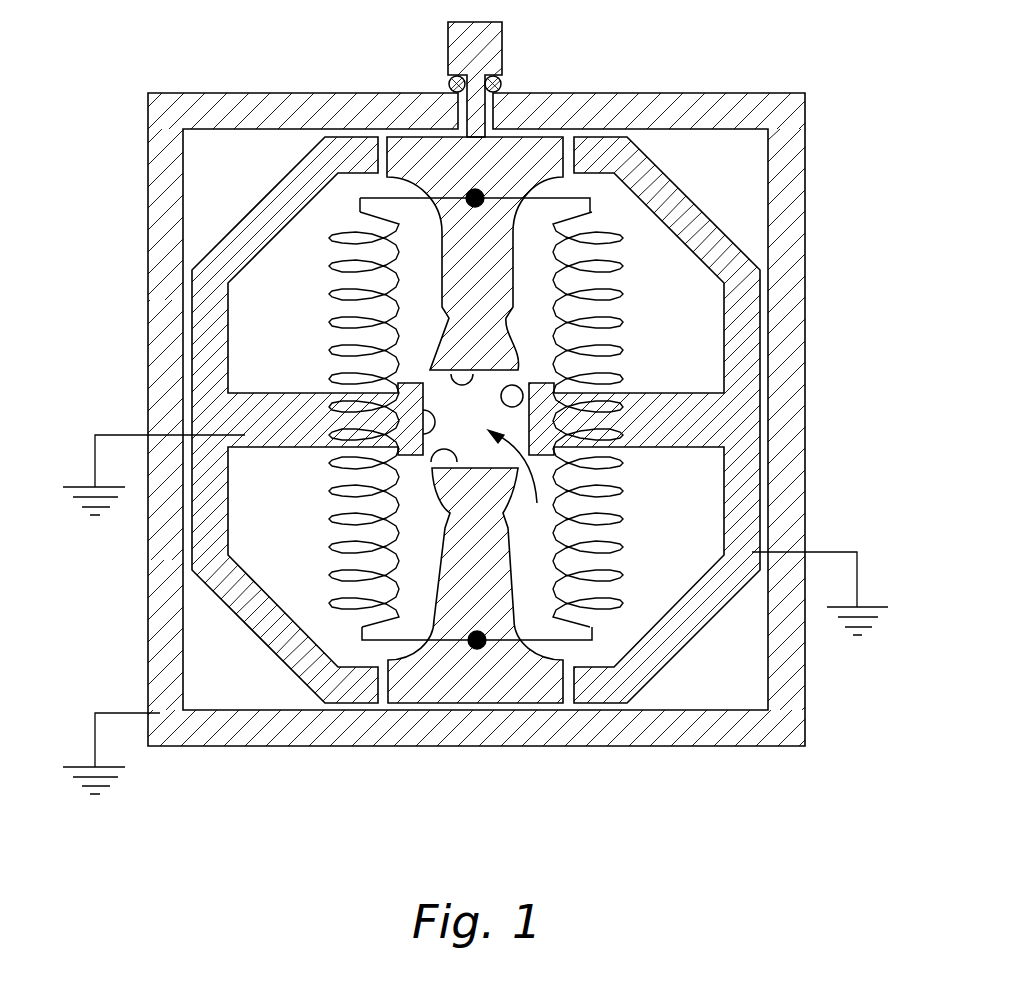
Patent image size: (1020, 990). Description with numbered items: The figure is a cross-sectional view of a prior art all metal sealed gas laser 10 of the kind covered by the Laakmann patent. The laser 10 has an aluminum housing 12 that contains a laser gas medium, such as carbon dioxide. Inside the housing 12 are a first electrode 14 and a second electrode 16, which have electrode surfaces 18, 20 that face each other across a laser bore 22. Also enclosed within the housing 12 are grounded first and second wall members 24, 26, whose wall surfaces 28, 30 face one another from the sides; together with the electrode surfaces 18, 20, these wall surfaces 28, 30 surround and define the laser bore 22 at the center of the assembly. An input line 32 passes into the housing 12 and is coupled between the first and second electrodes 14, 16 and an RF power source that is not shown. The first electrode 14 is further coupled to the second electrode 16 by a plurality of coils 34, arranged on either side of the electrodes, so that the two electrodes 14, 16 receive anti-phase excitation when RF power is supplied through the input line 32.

The all metal sealed gas laser 10 is at (766, 37).
The aluminum housing 12 is at (805, 168).
The first electrode 14 is at (490, 257).
The second electrode 16 is at (490, 588).
The electrode surface 18 is at (447, 388).
The electrode surface 20 is at (433, 452).
The laser bore 22 is at (518, 481).
The first wall member 24 is at (242, 403).
The second wall member 26 is at (707, 425).
The wall surface 28 is at (398, 458).
The wall surface 30 is at (522, 375).
The input line 32 is at (448, 73).
The coils 34 is at (330, 540).